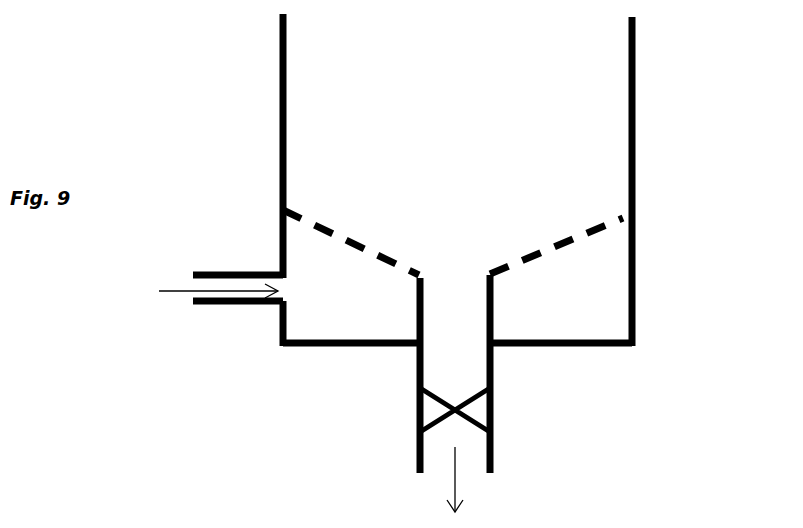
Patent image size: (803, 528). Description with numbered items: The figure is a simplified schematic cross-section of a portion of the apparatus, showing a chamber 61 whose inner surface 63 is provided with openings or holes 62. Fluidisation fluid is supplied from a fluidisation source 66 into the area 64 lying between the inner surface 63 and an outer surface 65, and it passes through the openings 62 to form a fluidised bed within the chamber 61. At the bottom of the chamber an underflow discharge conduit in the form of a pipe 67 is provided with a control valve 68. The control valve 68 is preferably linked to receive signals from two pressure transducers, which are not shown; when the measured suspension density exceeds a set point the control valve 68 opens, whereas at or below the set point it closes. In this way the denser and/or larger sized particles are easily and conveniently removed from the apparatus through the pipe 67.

The chamber 61 is at (310, 124).
The openings or holes 62 is at (347, 240).
The inner surface 63 is at (602, 222).
The area 64 is at (337, 322).
The outer surface 65 is at (279, 251).
The fluidisation source 66 is at (232, 293).
The pipe 67 is at (482, 360).
The control valve 68 is at (482, 405).